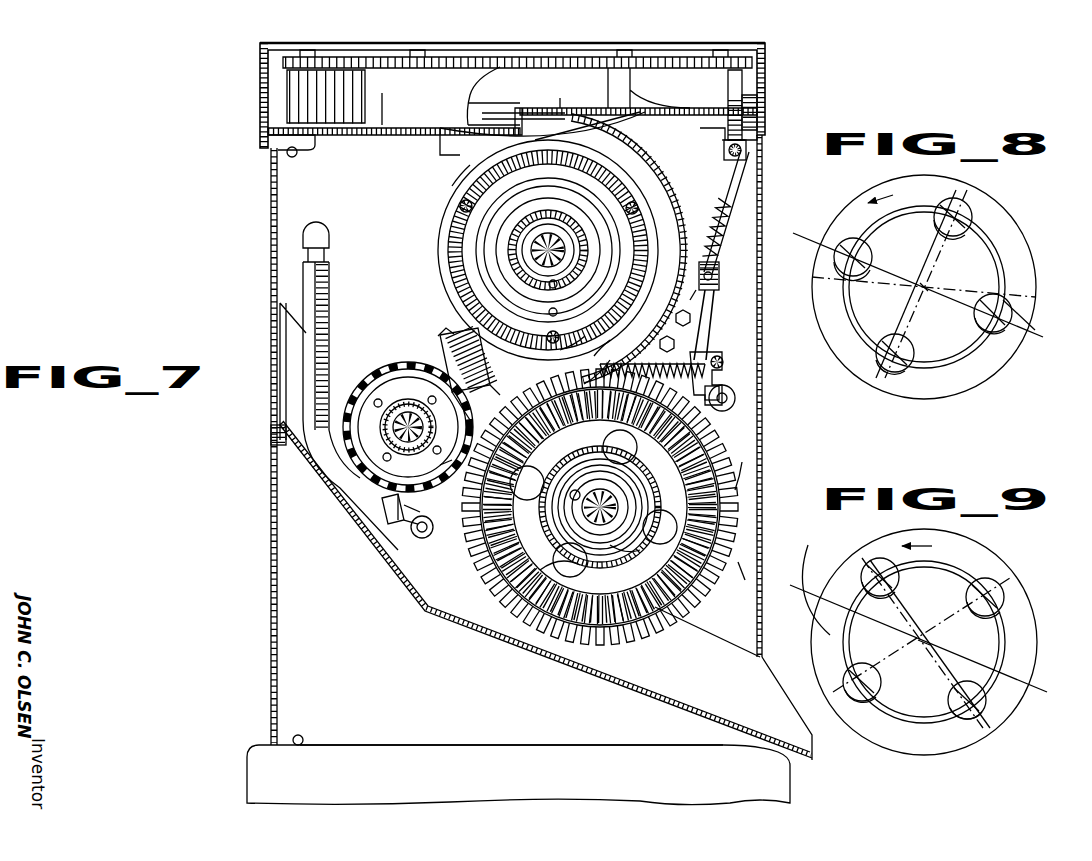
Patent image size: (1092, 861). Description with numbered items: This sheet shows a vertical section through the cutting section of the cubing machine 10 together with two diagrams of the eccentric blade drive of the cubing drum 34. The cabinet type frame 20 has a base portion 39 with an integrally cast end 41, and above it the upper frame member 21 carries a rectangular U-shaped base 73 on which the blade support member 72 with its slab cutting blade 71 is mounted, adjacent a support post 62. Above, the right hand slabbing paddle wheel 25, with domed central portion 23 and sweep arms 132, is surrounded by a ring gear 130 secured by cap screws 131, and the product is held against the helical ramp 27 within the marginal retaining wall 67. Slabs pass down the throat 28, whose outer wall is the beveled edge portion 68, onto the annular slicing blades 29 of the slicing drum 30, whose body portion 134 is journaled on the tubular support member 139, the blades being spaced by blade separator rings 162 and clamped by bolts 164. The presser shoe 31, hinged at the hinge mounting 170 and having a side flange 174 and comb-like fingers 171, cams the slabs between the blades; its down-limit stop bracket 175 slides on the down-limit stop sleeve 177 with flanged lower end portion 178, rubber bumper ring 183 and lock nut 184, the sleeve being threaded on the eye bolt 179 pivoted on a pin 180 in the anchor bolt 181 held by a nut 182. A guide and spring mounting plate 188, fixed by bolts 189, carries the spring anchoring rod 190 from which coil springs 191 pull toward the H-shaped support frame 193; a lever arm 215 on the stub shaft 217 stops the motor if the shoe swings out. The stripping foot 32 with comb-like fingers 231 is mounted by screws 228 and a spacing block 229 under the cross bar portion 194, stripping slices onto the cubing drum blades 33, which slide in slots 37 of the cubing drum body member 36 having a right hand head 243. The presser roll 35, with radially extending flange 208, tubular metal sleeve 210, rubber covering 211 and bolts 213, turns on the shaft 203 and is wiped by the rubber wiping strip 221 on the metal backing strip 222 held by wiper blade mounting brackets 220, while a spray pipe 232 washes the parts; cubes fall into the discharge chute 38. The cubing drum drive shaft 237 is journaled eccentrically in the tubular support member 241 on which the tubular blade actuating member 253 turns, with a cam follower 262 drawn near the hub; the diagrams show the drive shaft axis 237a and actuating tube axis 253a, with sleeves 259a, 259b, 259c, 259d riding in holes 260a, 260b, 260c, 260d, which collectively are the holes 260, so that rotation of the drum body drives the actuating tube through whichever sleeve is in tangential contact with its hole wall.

In FIG. 7, the upper frame member 21 is at (262, 95).
In FIG. 7, the ring gear 130 is at (765, 57).
In FIG. 7, the cap screws 131 is at (412, 47).
In FIG. 7, the marginal retaining wall 67 is at (420, 95).
In FIG. 7, the domed central portion 23 is at (496, 96).
In FIG. 7, the right hand slabbing paddle wheel 25 is at (498, 96).
In FIG. 7, the helical ramp 27 is at (482, 110).
In FIG. 7, the sweep arms 132 is at (560, 98).
In FIG. 7, the hinge mounting 170 is at (640, 118).
In FIG. 7, the slab cutting blade 71 is at (692, 108).
In FIG. 7, the nut 182 is at (752, 100).
In FIG. 7, the anchor bolt 181 is at (757, 122).
In FIG. 7, the throat 28 is at (600, 128).
In FIG. 7, the support post 62 is at (516, 137).
In FIG. 7, the beveled edge portion 68 is at (630, 120).
In FIG. 7, the blade support member 72 is at (722, 115).
In FIG. 7, the U-shaped base 73 is at (727, 134).
In FIG. 7, the pin 180 is at (745, 152).
In FIG. 7, the slicing drum 30 is at (468, 246).
In FIG. 7, the annular slicing blades 29 is at (452, 186).
In FIG. 7, the blade separator rings 162 is at (522, 168).
In FIG. 7, the slicing drum body portion 134 is at (478, 258).
In FIG. 7, the tubular support member 139 is at (515, 240).
In FIG. 7, the bolts 164 is at (460, 204).
In FIG. 7, the presser shoe 31 is at (668, 192).
In FIG. 7, the eye bolt 179 is at (726, 198).
In FIG. 7, the down-limit stop sleeve 177 is at (708, 262).
In FIG. 7, the down-limit stop bracket 175 is at (722, 260).
In FIG. 7, the rubber bumper ring 183 is at (722, 268).
In FIG. 7, the flanged lower end portion 178 is at (718, 278).
In FIG. 7, the lock nut 184 is at (705, 284).
In FIG. 7, the side flange 174 is at (702, 300).
In FIG. 7, the comb-like fingers 171 is at (699, 318).
In FIG. 7, the guide and spring mounting plate 188 is at (708, 341).
In FIG. 7, the bolts 189 is at (659, 360).
In FIG. 7, the spring anchoring rod 190 is at (724, 360).
In FIG. 7, the coil springs 191 is at (714, 389).
In FIG. 7, the lever arm 215 is at (735, 398).
In FIG. 7, the stub shaft 217 is at (733, 415).
In FIG. 7, the presser roll 35 is at (378, 364).
In FIG. 8, the presser roll 35 is at (830, 330).
In FIG. 9, the presser roll 35 is at (824, 600).
In FIG. 7, the radially extending flange 208 is at (432, 396).
In FIG. 7, the shaft 203 is at (428, 424).
In FIG. 7, the bolts 213 is at (378, 404).
In FIG. 7, the tubular metal sleeve 210 is at (437, 452).
In FIG. 7, the rubber covering 211 is at (390, 460).
In FIG. 7, the machine 10 is at (447, 462).
In FIG. 7, the H-shaped support frame 193 is at (447, 322).
In FIG. 7, the screws 228 is at (438, 340).
In FIG. 7, the cross bar portion 194 is at (452, 360).
In FIG. 7, the spacing block 229 is at (483, 377).
In FIG. 7, the stripping foot 32 is at (560, 350).
In FIG. 7, the cubing drum blades 33 is at (586, 345).
In FIG. 7, the comb-like fingers 231 is at (610, 340).
In FIG. 7, the rubber wiping strip 221 is at (382, 502).
In FIG. 7, the metal backing strip 222 is at (398, 504).
In FIG. 7, the wiper blade mounting brackets 220 is at (408, 520).
In FIG. 7, the spray pipe 232 is at (421, 540).
In FIG. 7, the cubing drum 34 is at (662, 632).
In FIG. 8, the cubing drum 34 is at (948, 398).
In FIG. 9, the cubing drum 34 is at (1018, 632).
In FIG. 7, the cubing drum body member 36 is at (638, 645).
In FIG. 8, the cubing drum body member 36 is at (975, 371).
In FIG. 7, the slots 37 is at (692, 613).
In FIG. 7, the right hand head 243 is at (742, 462).
In FIG. 7, the holes 260 is at (616, 448).
In FIG. 7, the tubular blade actuating member 253 is at (634, 480).
In FIG. 8, the tubular blade actuating member 253 is at (992, 323).
In FIG. 7, the cubing drum drive shaft 237 is at (606, 506).
In FIG. 7, the cam follower 262 is at (560, 570).
In FIG. 7, the tubular support member 241 is at (622, 556).
In FIG. 7, the discharge chute 38 is at (522, 654).
In FIG. 7, the cabinet type frame 20 is at (268, 622).
In FIG. 7, the integrally cast end 41 is at (265, 777).
In FIG. 7, the base portion 39 is at (502, 780).
In FIG. 8, the axis of the blade actuating tube 253a is at (923, 283).
In FIG. 9, the axis of the blade actuating tube 253a is at (920, 643).
In FIG. 8, the axis of the cubing drum drive shaft 237a is at (928, 291).
In FIG. 9, the axis of the cubing drum drive shaft 237a is at (930, 643).
In FIG. 8, the sleeve 259d is at (960, 226).
In FIG. 9, the sleeve 259d is at (883, 562).
In FIG. 8, the hole 260d is at (966, 213).
In FIG. 8, the sleeve 259c is at (850, 248).
In FIG. 9, the sleeve 259c is at (857, 700).
In FIG. 8, the hole 260c is at (863, 257).
In FIG. 9, the hole 260c is at (896, 583).
In FIG. 8, the sleeve 259b is at (995, 298).
In FIG. 9, the sleeve 259b is at (979, 582).
In FIG. 7, the hole 260b is at (582, 572).
In FIG. 8, the hole 260b is at (1005, 308).
In FIG. 9, the hole 260b is at (1001, 605).
In FIG. 8, the sleeve 259a is at (885, 357).
In FIG. 9, the sleeve 259a is at (986, 703).
In FIG. 8, the hole 260a is at (906, 366).
In FIG. 9, the hole 260a is at (960, 705).